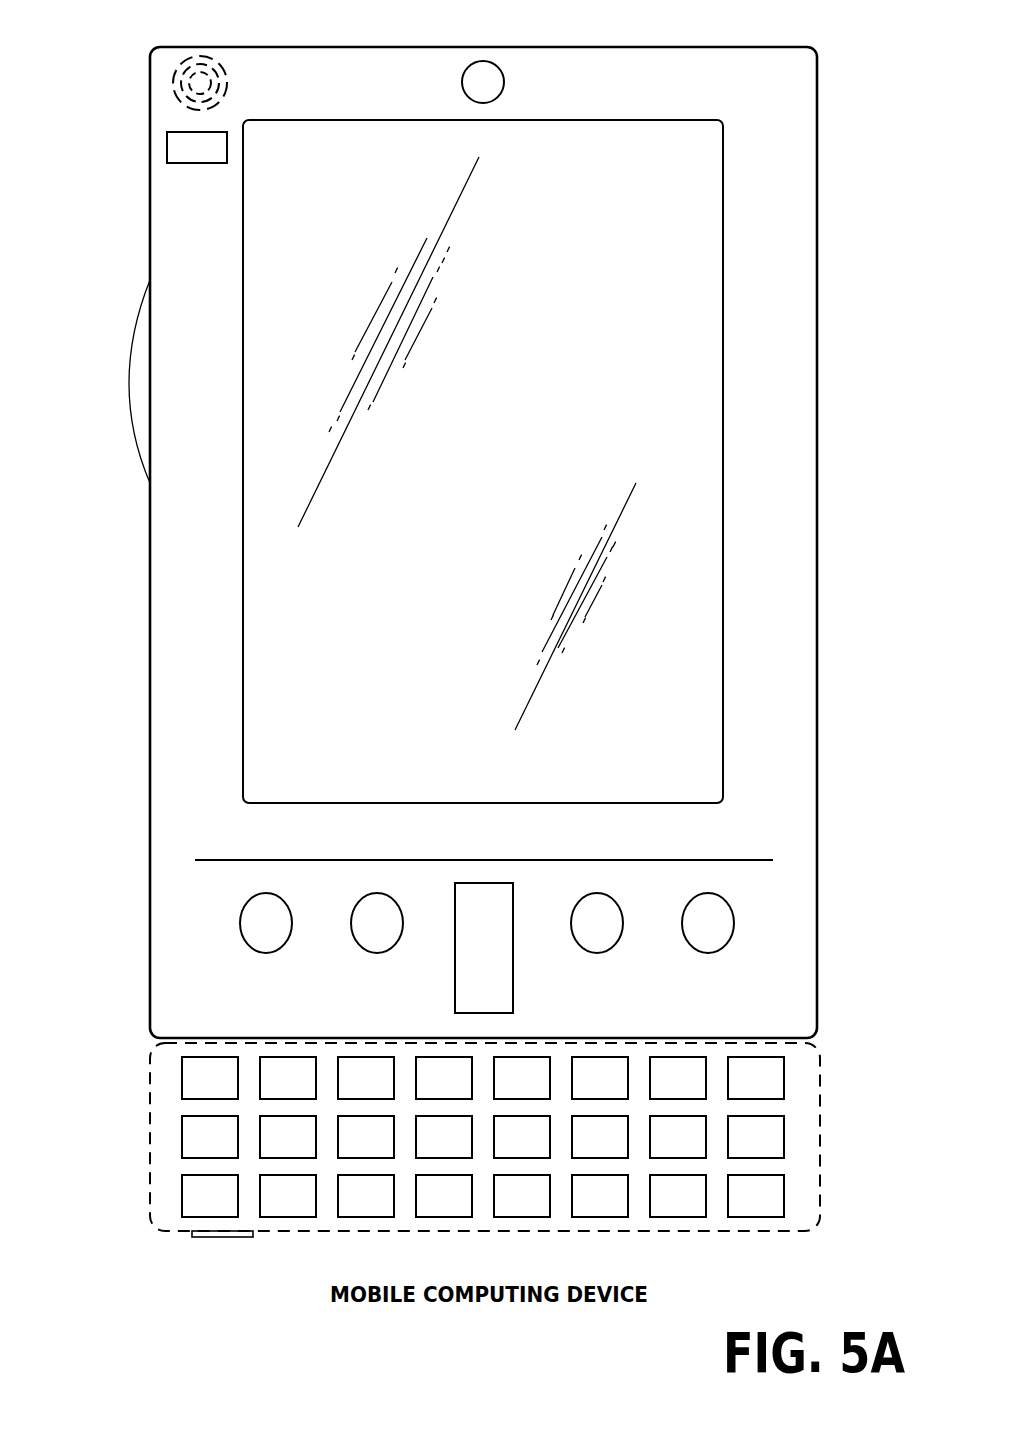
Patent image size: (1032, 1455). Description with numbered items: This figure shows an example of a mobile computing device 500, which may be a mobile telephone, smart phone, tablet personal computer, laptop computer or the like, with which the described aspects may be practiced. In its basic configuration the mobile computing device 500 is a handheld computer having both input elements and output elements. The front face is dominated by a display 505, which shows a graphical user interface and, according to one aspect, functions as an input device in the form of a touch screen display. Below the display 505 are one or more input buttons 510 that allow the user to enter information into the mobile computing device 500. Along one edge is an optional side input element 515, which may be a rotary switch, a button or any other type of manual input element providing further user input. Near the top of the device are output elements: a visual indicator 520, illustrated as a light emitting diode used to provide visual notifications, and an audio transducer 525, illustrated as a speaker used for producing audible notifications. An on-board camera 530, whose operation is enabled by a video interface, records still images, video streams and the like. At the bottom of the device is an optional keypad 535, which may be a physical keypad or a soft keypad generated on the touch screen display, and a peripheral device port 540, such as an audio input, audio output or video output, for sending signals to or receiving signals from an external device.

The mobile computing device 500 is at (790, 47).
The display 505 is at (268, 639).
The input buttons 510 is at (266, 953).
The side input element 515 is at (128, 383).
The visual indicator 520 is at (167, 147).
The audio transducer 525 is at (170, 86).
The on-board camera 530 is at (483, 61).
The keypad 535 is at (160, 1135).
The peripheral device port 540 is at (200, 1238).